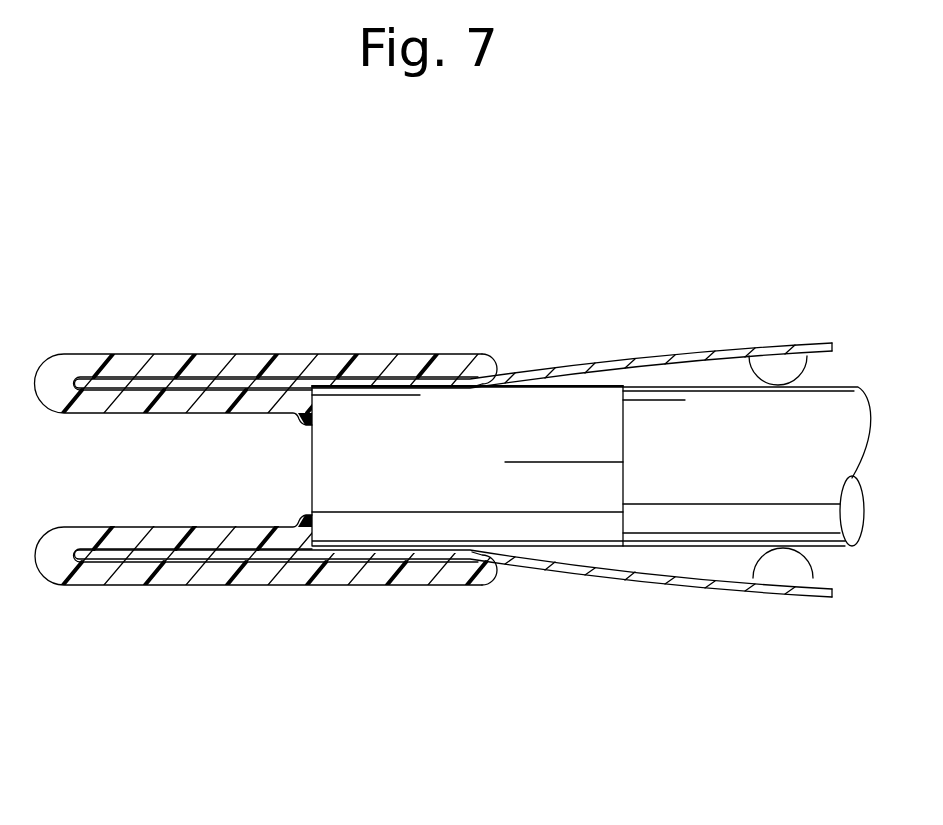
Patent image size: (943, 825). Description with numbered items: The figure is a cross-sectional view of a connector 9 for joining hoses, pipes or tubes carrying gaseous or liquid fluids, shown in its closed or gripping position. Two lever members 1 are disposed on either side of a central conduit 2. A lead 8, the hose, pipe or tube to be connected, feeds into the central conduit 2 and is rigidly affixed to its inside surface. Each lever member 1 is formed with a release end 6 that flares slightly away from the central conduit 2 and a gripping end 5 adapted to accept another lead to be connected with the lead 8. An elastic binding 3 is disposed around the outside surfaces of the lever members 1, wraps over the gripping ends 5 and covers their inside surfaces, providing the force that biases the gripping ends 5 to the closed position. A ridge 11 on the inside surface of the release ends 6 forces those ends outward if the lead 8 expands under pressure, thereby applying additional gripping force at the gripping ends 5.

The lever member 1 is at (578, 361).
The central conduit 2 is at (516, 490).
The elastic binding 3 is at (138, 362).
The gripping end 5 is at (170, 414).
The release end 6 is at (827, 342).
The lead 8 is at (832, 386).
The connector 9 is at (297, 455).
The ridge 11 is at (765, 365).